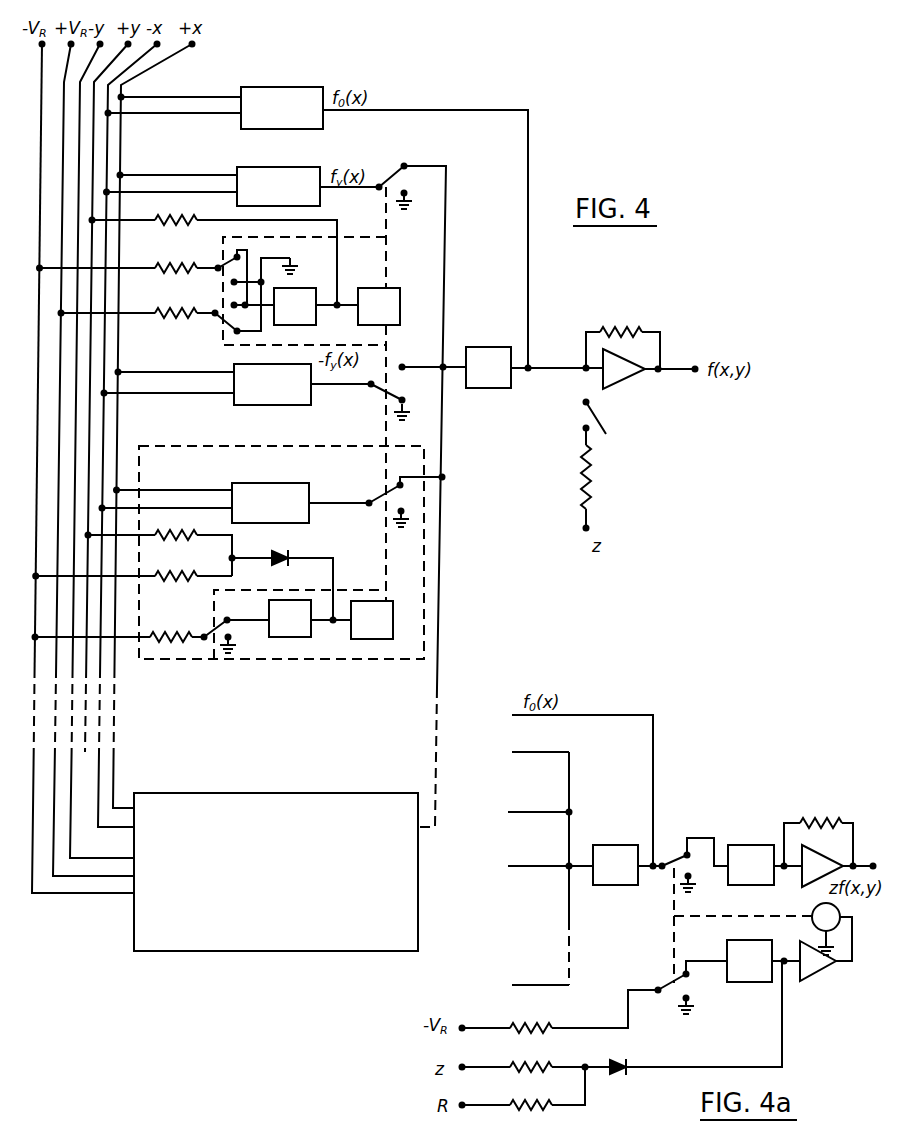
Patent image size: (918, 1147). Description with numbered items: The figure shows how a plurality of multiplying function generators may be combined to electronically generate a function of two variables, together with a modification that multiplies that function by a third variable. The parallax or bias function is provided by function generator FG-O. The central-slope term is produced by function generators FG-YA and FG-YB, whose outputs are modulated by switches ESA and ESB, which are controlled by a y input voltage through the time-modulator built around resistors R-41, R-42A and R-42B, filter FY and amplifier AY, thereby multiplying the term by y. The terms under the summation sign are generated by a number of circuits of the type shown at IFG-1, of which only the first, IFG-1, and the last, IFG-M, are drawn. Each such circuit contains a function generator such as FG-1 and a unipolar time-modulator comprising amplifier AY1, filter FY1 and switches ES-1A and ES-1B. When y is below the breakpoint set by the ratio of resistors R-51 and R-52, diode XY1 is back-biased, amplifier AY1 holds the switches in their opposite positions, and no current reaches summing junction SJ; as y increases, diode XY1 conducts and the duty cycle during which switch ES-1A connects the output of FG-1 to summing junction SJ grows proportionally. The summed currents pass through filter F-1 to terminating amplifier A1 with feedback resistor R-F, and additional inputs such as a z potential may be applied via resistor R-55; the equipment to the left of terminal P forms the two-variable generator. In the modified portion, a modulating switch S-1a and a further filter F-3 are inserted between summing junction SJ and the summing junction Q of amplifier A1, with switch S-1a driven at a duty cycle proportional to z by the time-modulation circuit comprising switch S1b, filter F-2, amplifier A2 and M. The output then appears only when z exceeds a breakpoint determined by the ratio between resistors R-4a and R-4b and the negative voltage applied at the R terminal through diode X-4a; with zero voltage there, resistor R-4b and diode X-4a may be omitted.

In FIG. 4, the function generator FG-O is at (214, 108).
In FIG. 4, the function generator FG-YA is at (241, 186).
In FIG. 4, the function generator FG-YB is at (236, 384).
In FIG. 4, the function generator FG-1 is at (234, 503).
In FIG. 4, the switch ESA is at (440, 193).
In FIG. 4, the switch ESB is at (434, 392).
In FIG. 4, the switch ES-1A is at (389, 497).
In FIG. 4, the switch ES-1B is at (204, 623).
In FIG. 4, the summing junction SJ is at (443, 432).
In FIG. 4a, the summing junction SJ is at (579, 764).
In FIG. 4, the resistor R-41 is at (198, 226).
In FIG. 4, the resistor R-42A is at (148, 275).
In FIG. 4, the resistor R-42B is at (151, 321).
In FIG. 4, the resistor R-51 is at (166, 535).
In FIG. 4, the resistor R-52 is at (166, 576).
In FIG. 4, the resistor R-55 is at (596, 470).
In FIG. 4, the feedback resistor R-F is at (644, 332).
In FIG. 4a, the feedback resistor R-F is at (797, 822).
In FIG. 4a, the resistor R-4a is at (512, 1077).
In FIG. 4a, the resistor R-4b is at (522, 1101).
In FIG. 4, the filter FY is at (295, 306).
In FIG. 4, the amplifier AY is at (358, 306).
In FIG. 4, the filter FY1 is at (290, 618).
In FIG. 4, the amplifier AY1 is at (352, 620).
In FIG. 4, the filter F-1 is at (534, 367).
In FIG. 4a, the filter F-1 is at (629, 865).
In FIG. 4a, the filter F-2 is at (763, 961).
In FIG. 4a, the filter F-3 is at (765, 865).
In FIG. 4, the terminal P is at (536, 370).
In FIG. 4a, the summing junction Q is at (786, 870).
In FIG. 4, the terminating amplifier A1 is at (651, 369).
In FIG. 4a, the terminating amplifier A1 is at (839, 866).
In FIG. 4a, the amplifier A2 is at (818, 961).
In FIG. 4a, the time-modulator element M is at (832, 932).
In FIG. 4, the interpolating function generator circuit IFG-1 is at (312, 446).
In FIG. 4, the interpolating function generator circuit IFG-M is at (326, 797).
In FIG. 4, the diode XY1 is at (268, 560).
In FIG. 4a, the diode X-4a is at (691, 1035).
In FIG. 4a, the modulating switch S-1a is at (676, 850).
In FIG. 4a, the switch S1b is at (660, 987).